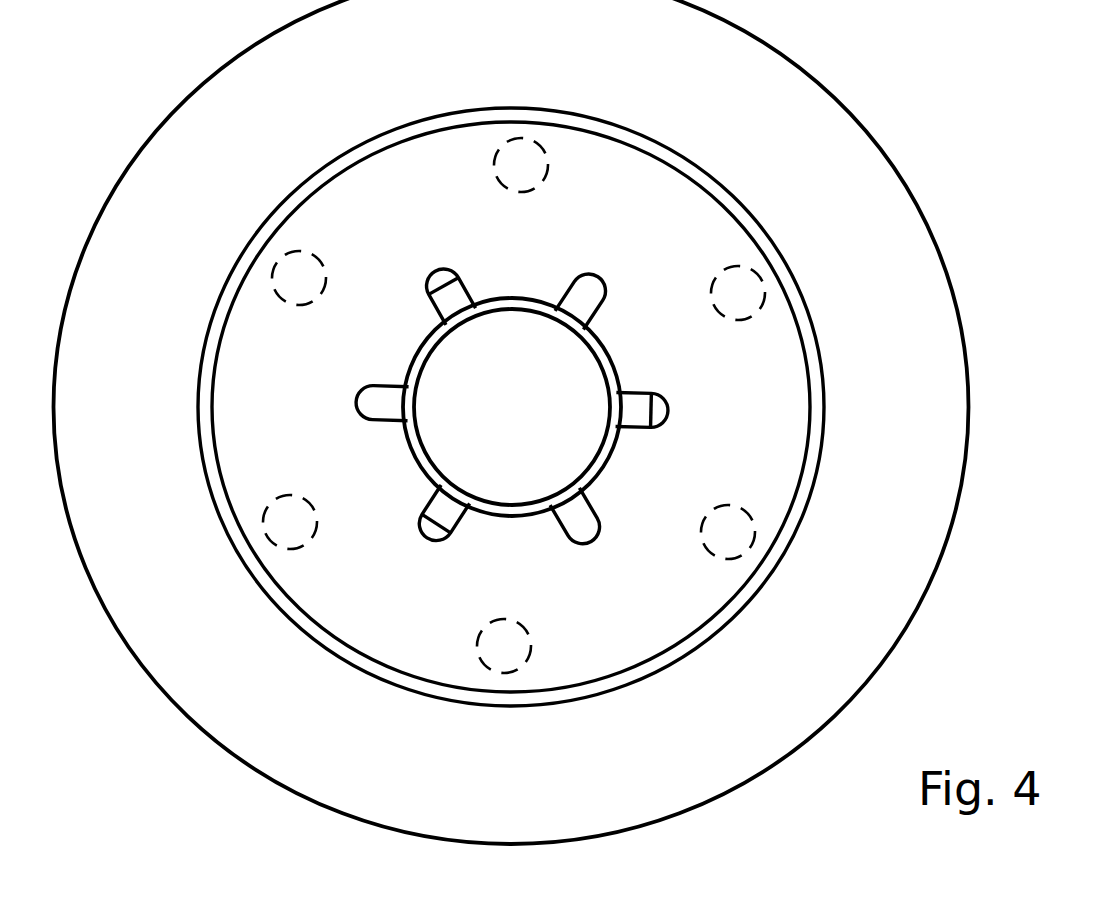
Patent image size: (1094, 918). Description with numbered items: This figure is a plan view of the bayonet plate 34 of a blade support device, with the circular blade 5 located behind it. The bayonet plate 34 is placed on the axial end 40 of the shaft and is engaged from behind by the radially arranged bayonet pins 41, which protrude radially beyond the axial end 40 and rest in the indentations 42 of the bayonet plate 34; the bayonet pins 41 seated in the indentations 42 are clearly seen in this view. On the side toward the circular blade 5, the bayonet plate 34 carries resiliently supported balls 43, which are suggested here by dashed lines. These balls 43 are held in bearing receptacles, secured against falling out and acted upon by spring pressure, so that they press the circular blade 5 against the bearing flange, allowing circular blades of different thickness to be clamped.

The circular blade 5 is at (902, 352).
The bayonet plate 34 is at (753, 430).
The axial end 40 is at (573, 442).
The bayonet pins 41 is at (655, 422).
The indentations 42 is at (665, 400).
The balls 43 is at (738, 290).